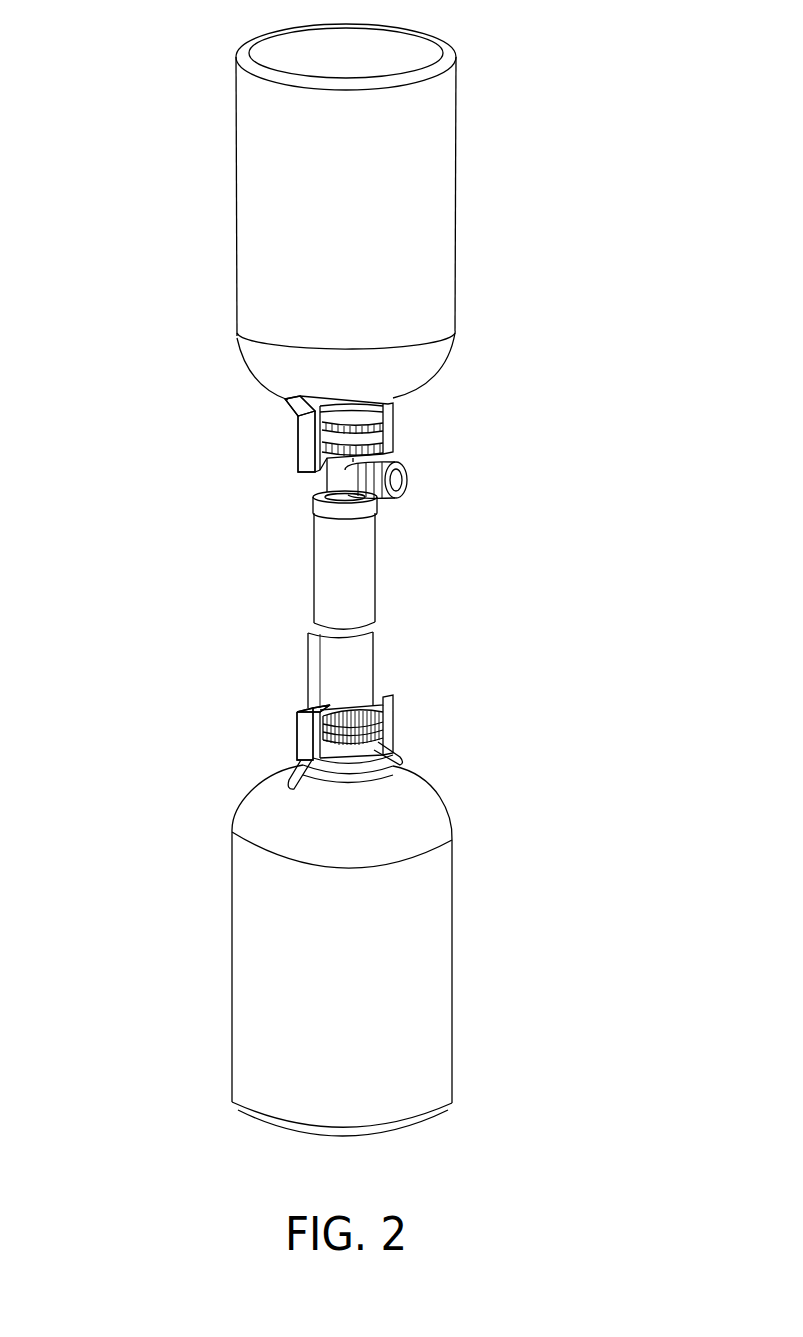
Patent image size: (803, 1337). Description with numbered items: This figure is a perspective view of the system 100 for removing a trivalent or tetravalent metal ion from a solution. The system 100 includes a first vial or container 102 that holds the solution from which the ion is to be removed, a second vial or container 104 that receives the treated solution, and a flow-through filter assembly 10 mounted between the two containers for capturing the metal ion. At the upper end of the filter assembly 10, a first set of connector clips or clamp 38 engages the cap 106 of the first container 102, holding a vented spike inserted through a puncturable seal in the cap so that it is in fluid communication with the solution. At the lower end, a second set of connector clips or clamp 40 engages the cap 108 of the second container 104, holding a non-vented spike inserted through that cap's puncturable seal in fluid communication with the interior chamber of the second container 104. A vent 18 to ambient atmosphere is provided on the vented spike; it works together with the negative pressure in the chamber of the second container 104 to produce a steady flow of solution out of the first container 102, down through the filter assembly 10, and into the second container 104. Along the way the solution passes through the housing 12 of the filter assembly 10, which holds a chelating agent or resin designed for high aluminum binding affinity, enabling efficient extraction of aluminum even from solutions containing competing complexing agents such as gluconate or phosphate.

The system 100 is at (567, 136).
The flow-through filter assembly 10 is at (125, 563).
The first container 102 is at (252, 225).
The second container 104 is at (243, 998).
The cap 106 is at (386, 428).
The cap 108 is at (387, 742).
The clamp 38 is at (298, 452).
The clamp 40 is at (303, 742).
The vent 18 is at (406, 492).
The housing 12 is at (358, 587).